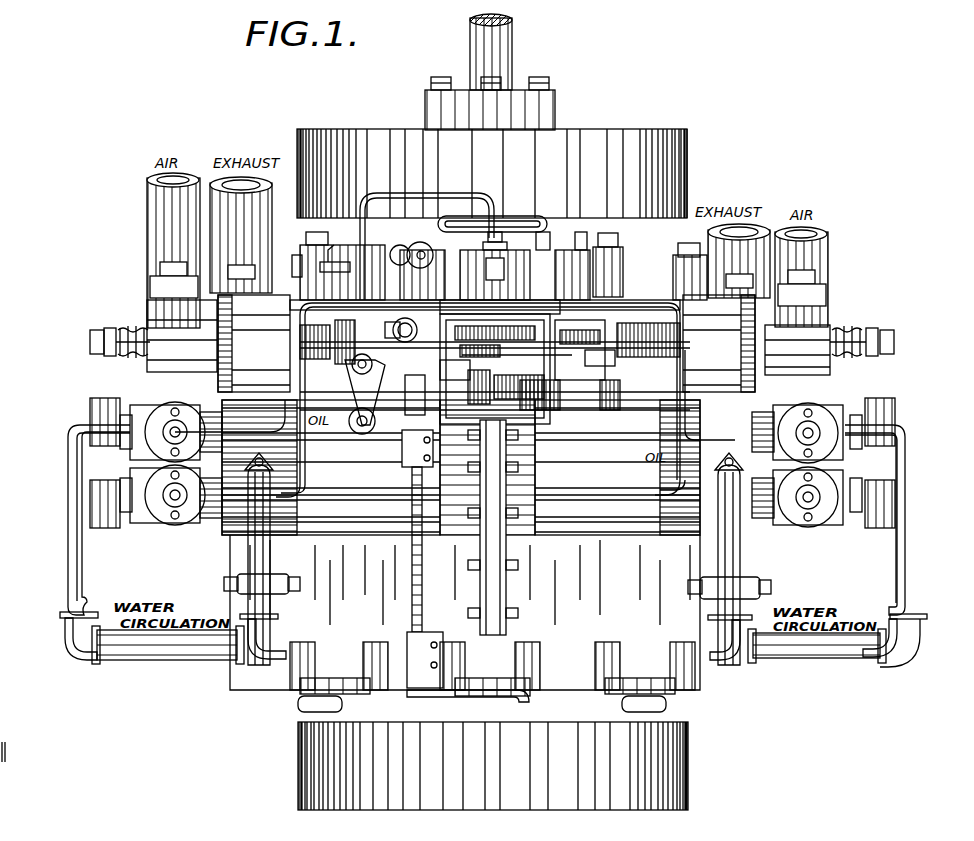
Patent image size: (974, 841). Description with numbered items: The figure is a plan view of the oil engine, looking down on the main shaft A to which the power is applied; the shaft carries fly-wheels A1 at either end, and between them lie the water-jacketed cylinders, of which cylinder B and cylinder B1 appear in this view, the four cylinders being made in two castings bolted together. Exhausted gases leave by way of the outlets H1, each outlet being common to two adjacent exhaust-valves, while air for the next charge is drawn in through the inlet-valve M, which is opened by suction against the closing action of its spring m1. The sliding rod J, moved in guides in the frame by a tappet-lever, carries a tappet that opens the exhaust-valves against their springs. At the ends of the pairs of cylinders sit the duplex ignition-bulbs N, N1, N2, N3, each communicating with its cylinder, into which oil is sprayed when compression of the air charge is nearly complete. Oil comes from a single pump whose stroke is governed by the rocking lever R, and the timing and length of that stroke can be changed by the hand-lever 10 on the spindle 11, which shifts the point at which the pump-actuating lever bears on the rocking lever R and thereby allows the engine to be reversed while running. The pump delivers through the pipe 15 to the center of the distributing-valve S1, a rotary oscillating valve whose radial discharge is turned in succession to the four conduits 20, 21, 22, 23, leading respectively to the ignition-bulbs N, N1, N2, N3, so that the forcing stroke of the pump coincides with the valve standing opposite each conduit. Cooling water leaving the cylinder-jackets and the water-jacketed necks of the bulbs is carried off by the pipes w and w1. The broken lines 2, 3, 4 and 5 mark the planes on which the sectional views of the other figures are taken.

The main shaft A is at (499, 52).
The fly-wheel A1 is at (492, 469).
The air and inlet-valve M is at (488, 337).
The spring m1 is at (492, 353).
The outlet H1 is at (486, 343).
The hand-lever 10 is at (411, 249).
The spindle 11 is at (335, 253).
The pipe 15 is at (427, 246).
The conduit or pipe 20 is at (478, 400).
The conduit or pipe 21 is at (680, 480).
The conduit or pipe 22 is at (750, 440).
The conduit or pipe 23 is at (230, 416).
The rocking lever R is at (368, 394).
The distributing-valve S1 is at (506, 369).
The sliding rod J is at (585, 350).
The cylinder B is at (331, 467).
The cylinder B1 is at (617, 467).
The ignition-bulb N is at (156, 508).
The ignition-bulb N1 is at (823, 509).
The ignition-bulb N2 is at (823, 422).
The ignition-bulb N3 is at (156, 421).
The water-outlet pipe w is at (488, 546).
The water-outlet pipe w1 is at (494, 559).
The section line 2 2 is at (280, 662).
The section line 3 3 is at (72, 432).
The section line 4 4 is at (145, 272).
The section line 5 5 is at (145, 303).